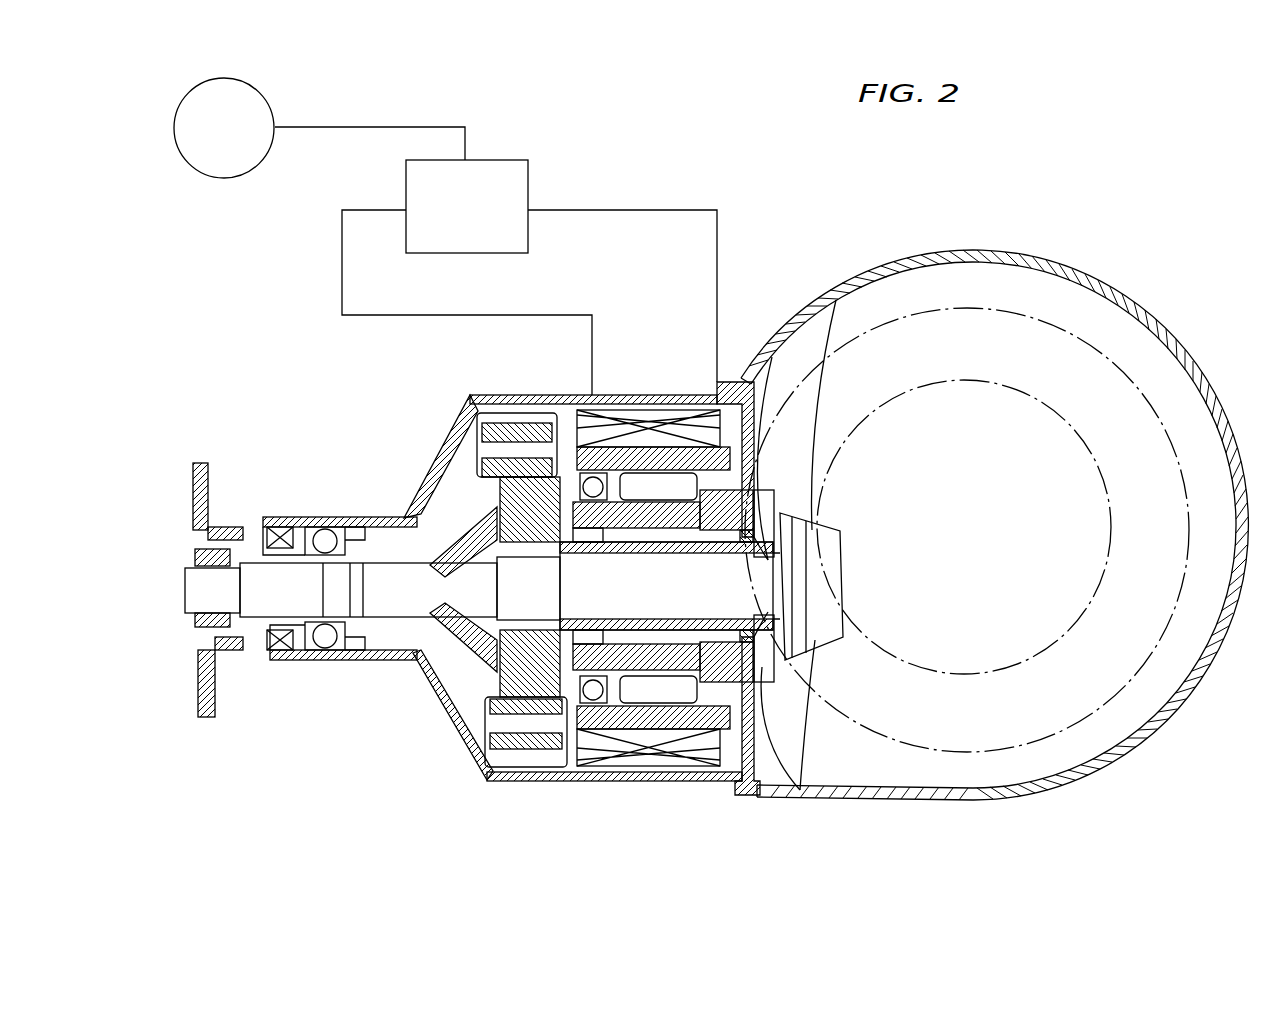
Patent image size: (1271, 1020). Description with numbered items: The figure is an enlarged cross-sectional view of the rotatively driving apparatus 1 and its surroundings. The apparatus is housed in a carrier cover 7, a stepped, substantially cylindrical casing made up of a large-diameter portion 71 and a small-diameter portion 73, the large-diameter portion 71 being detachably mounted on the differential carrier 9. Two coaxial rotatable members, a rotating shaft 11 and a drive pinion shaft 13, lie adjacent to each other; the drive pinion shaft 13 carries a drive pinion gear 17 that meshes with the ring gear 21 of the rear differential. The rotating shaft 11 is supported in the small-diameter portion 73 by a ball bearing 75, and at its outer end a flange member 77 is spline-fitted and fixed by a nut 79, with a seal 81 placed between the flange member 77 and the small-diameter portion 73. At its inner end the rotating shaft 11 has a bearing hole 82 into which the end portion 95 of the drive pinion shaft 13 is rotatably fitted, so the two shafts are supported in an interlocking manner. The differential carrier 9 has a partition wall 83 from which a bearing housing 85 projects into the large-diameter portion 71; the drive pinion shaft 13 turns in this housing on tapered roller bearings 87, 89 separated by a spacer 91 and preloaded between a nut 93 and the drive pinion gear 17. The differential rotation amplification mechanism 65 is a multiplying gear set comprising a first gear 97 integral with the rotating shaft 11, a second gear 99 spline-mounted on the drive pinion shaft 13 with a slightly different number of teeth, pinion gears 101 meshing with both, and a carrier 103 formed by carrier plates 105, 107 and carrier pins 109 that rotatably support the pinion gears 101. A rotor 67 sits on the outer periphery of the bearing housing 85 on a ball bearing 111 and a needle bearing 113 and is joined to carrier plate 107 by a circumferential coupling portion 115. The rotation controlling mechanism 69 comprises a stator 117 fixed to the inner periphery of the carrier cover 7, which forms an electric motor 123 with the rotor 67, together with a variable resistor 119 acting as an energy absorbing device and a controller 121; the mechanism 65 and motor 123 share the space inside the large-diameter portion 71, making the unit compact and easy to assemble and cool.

The rotatively driving apparatus 1 is at (640, 184).
The carrier cover 7 is at (574, 571).
The differential carrier 9 is at (994, 497).
The rotating shaft 11 is at (330, 520).
The drive pinion shaft 13 is at (772, 357).
The drive pinion gear 17 is at (836, 300).
The ring gear 21 is at (1010, 300).
The differential rotation amplification mechanism 65 is at (470, 395).
The rotor 67 is at (627, 457).
The rotation controlling mechanism 69 is at (499, 158).
The large-diameter portion 71 is at (686, 394).
The small-diameter portion 73 is at (380, 517).
The ball bearing 75 is at (305, 527).
The flange member 77 is at (195, 462).
The nut 79 is at (200, 553).
The seal 81 is at (268, 522).
The bearing hole 82 is at (460, 640).
The partition wall 83 is at (768, 750).
The bearing housing 85 is at (792, 750).
The tapered roller bearing 87 is at (600, 554).
The tapered roller bearing 89 is at (748, 556).
The spacer 91 is at (690, 530).
The nut 93 is at (560, 565).
The end portion 95 is at (432, 655).
The first gear 97 is at (468, 522).
The second gear 99 is at (513, 409).
The pinion gear 101 is at (487, 413).
The carrier 103 is at (478, 771).
The carrier plate 105 is at (497, 767).
The carrier plate 107 is at (543, 774).
The carrier pin 109 is at (530, 749).
The ball bearing 111 is at (606, 500).
The needle bearing 113 is at (738, 535).
The coupling portion 115 is at (650, 768).
The stator 117 is at (650, 410).
The variable resistor 119 is at (420, 178).
The controller 121 is at (252, 98).
The electric motor 123 is at (665, 400).